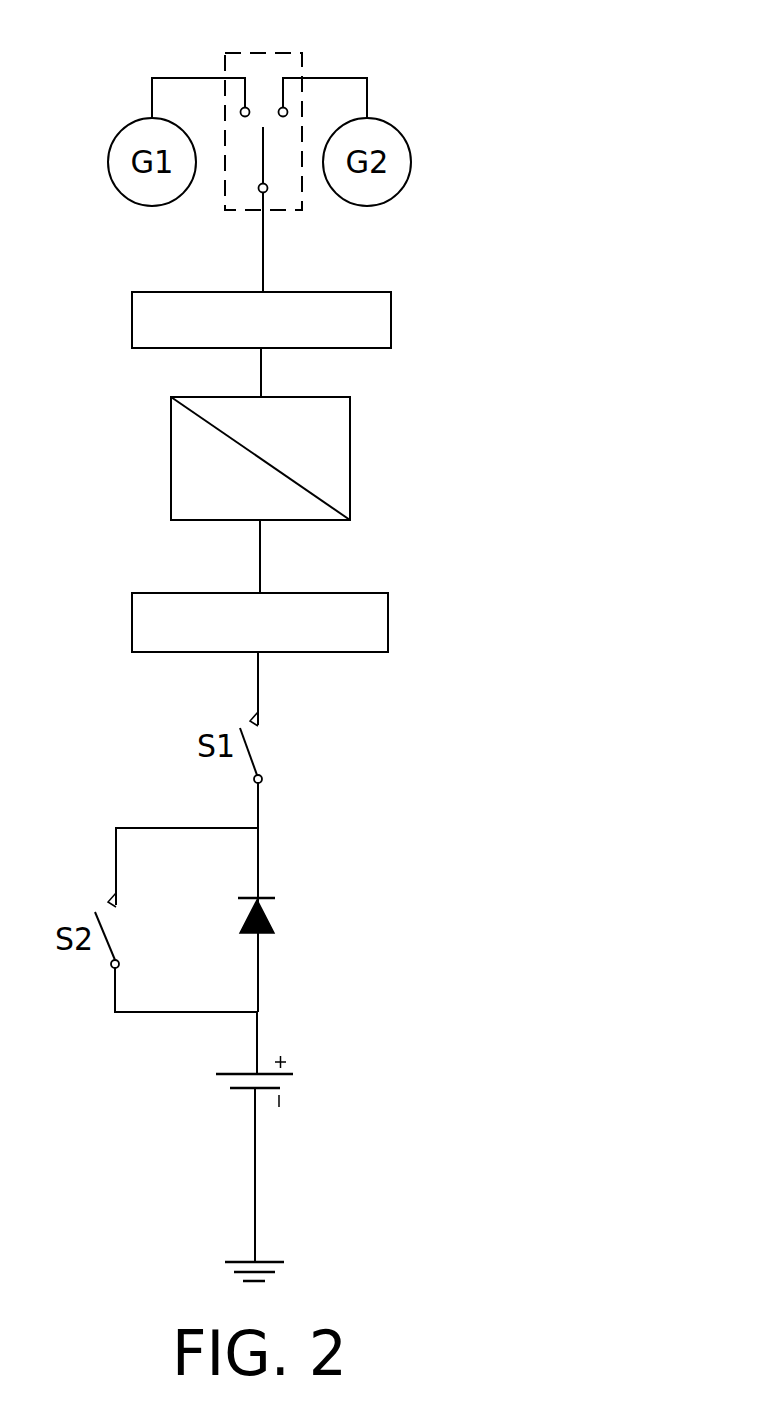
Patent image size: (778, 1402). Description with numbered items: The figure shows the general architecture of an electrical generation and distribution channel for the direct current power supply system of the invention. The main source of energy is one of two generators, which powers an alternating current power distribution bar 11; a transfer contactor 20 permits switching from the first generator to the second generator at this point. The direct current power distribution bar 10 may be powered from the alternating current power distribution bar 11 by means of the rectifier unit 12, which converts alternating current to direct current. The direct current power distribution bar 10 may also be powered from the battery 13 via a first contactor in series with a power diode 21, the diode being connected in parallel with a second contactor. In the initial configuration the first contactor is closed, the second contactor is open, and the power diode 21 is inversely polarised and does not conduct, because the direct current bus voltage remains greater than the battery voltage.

The transfer contactor 20 is at (302, 63).
The alternating current power distribution bar 11 is at (138, 320).
The rectifier unit 12 is at (333, 462).
The direct current power distribution bar 10 is at (377, 628).
The power diode 21 is at (270, 923).
The battery 13 is at (283, 1082).